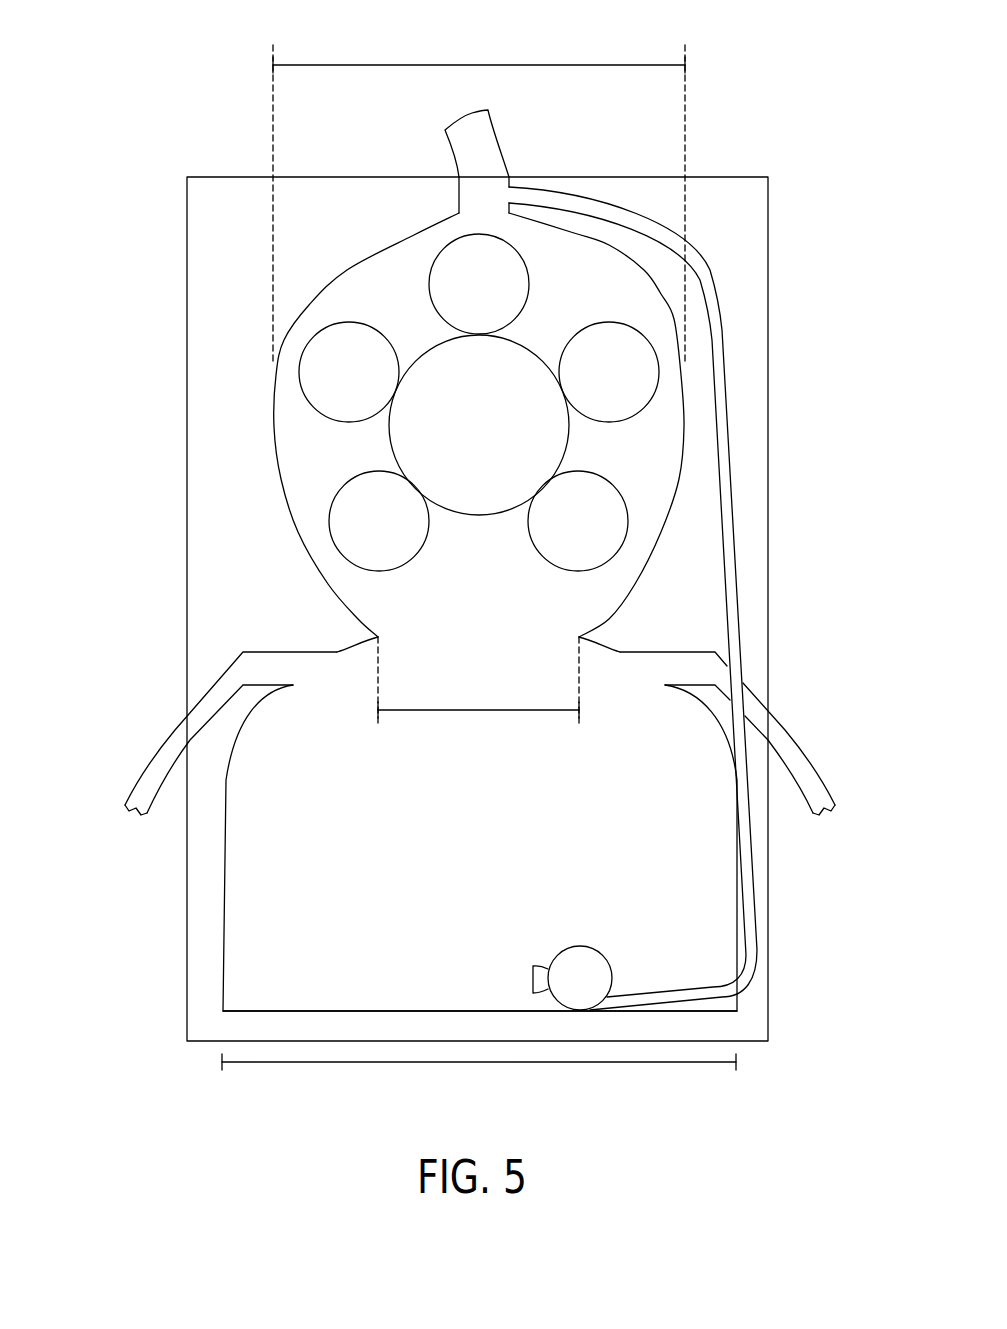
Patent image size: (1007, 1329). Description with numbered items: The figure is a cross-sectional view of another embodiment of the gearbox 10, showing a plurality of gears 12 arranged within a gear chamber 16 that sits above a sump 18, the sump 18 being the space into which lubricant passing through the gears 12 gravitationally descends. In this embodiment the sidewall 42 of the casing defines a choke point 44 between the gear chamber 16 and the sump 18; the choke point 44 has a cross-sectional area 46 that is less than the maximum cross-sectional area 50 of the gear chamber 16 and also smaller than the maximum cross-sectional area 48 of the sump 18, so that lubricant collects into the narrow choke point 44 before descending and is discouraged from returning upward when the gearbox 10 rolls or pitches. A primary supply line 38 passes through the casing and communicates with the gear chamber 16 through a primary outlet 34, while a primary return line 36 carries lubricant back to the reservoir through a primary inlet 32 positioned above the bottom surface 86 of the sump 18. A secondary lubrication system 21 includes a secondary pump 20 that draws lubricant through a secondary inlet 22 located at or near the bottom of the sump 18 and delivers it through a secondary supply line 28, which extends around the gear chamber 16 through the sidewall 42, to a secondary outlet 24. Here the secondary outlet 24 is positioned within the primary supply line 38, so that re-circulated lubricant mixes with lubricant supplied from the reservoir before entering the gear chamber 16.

The gearbox 10 is at (112, 139).
The gears 12 is at (223, 177).
The gear chamber 16 is at (467, 578).
The sump 18 is at (421, 848).
The secondary pump 20 is at (582, 968).
The secondary lubrication system 21 is at (744, 363).
The secondary inlet 22 is at (521, 966).
The secondary outlet 24 is at (521, 178).
The secondary supply line 28 is at (728, 443).
The primary inlet 32 is at (295, 665).
The primary outlet 34 is at (479, 194).
The primary return line 36 is at (173, 733).
The primary supply line 38 is at (497, 153).
The sidewall 42 is at (200, 292).
The choke point 44 is at (449, 663).
The cross-sectional area 46 is at (478, 728).
The maximum cross-sectional area 48 is at (479, 1079).
The maximum cross-sectional area 50 is at (479, 195).
The bottom surface 86 is at (318, 1012).